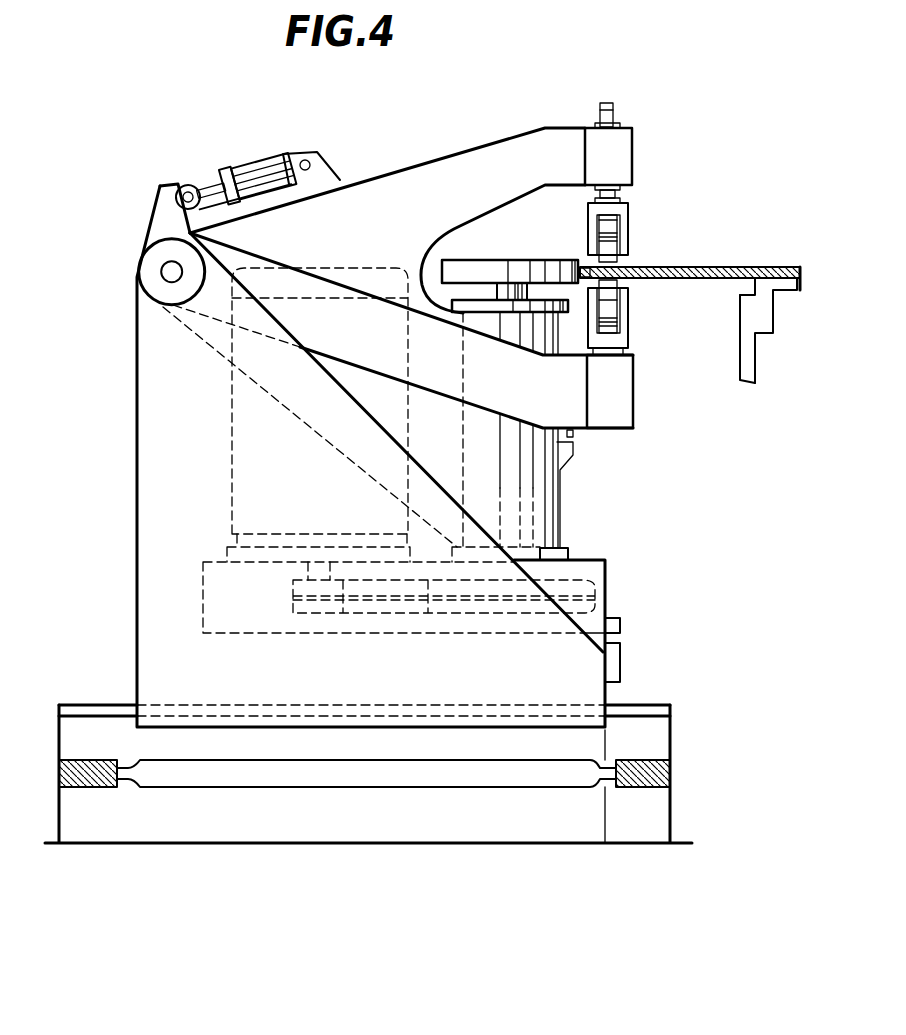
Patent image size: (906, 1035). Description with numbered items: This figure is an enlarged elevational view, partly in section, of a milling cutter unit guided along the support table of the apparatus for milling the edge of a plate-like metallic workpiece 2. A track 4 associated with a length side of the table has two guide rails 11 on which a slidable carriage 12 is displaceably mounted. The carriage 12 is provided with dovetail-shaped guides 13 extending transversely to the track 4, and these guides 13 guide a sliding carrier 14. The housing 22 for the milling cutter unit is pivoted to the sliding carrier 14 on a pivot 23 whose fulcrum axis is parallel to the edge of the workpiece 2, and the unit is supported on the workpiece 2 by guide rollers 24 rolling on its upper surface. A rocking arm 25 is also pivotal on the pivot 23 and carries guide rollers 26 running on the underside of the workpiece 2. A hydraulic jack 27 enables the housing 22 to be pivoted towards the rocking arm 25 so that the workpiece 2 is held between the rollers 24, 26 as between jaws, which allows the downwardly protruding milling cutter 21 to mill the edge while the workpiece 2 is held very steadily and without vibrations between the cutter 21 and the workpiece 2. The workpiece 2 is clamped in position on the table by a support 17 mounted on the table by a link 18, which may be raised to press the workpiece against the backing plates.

The workpiece 2 is at (685, 270).
The track 4 is at (267, 820).
The guide rail 11 is at (83, 777).
The slidable carriage 12 is at (643, 747).
The dovetail-shaped guide 13 is at (110, 710).
The sliding carrier 14 is at (195, 437).
The support 17 is at (782, 285).
The link 18 is at (750, 347).
The milling cutter 21 is at (492, 272).
The housing 22 is at (515, 492).
The pivot 23 is at (170, 272).
The guide roller 24 is at (607, 238).
The rocking arm 25 is at (537, 402).
The guide roller 26 is at (608, 310).
The hydraulic jack 27 is at (263, 167).